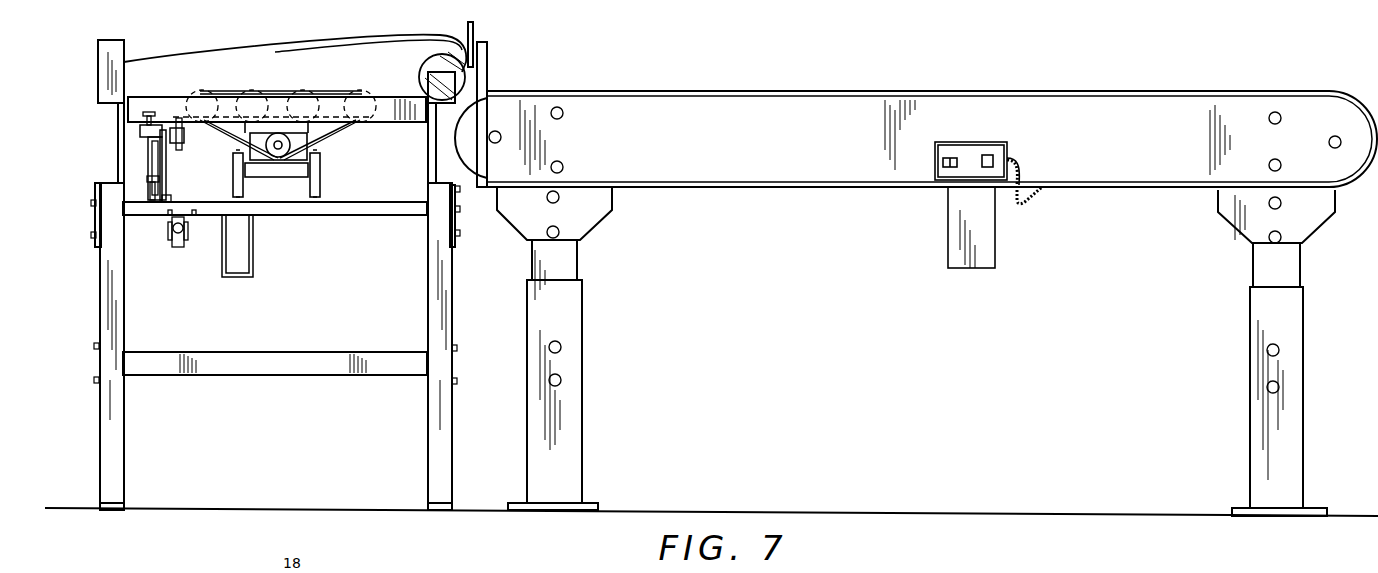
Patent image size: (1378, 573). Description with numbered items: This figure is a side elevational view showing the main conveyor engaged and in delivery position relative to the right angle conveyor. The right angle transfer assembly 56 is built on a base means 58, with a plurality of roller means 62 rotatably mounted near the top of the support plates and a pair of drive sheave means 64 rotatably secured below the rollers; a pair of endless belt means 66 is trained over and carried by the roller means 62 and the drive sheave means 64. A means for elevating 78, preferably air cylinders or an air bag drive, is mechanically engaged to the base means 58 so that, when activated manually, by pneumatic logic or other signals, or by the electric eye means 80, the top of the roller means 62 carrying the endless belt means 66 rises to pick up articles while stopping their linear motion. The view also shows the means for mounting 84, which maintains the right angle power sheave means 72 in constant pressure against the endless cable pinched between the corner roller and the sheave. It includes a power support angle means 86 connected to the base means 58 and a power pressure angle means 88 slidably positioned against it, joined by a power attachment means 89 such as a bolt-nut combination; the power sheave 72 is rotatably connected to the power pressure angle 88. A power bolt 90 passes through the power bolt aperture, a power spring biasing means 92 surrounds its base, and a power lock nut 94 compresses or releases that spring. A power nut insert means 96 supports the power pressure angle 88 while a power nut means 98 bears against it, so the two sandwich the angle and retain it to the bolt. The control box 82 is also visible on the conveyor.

The right angle transfer assembly means 56 is at (341, 88).
The base means 58 is at (303, 215).
The roller means 62 is at (262, 91).
The drive sheave means 64 is at (280, 160).
The endless belt means 66 is at (358, 123).
The right angle power sheave means 72 is at (170, 110).
The means for elevating 78 is at (218, 276).
The electric eye means 80 is at (124, 63).
The control box 82 is at (1056, 172).
The means for mounting 84 is at (141, 160).
The power support angle means 86 is at (170, 201).
The power pressure angle means 88 is at (172, 160).
The power attachment means 89 is at (164, 183).
The power bolt 90 is at (150, 168).
The power spring biasing means 92 is at (152, 195).
The power lock nut 94 is at (150, 186).
The power nut insert means 96 is at (147, 137).
The power nut means 98 is at (145, 120).